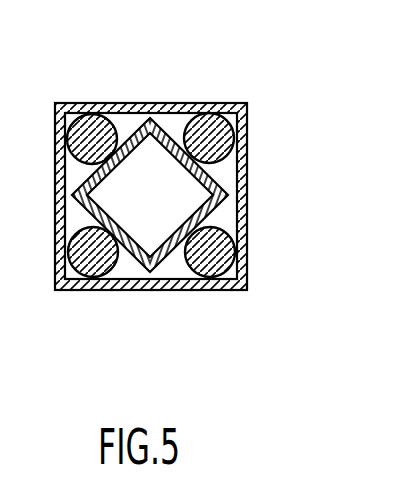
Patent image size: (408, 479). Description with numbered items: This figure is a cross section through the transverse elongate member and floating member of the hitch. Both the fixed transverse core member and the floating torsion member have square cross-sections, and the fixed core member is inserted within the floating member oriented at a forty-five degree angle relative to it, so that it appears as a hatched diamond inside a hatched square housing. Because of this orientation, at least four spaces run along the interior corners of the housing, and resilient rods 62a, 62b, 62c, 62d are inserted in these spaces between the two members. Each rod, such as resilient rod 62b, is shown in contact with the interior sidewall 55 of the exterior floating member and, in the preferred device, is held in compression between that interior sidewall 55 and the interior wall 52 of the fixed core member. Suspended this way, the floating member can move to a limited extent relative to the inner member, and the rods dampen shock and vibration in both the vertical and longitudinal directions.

The interior wall 52 is at (247, 156).
The interior sidewall 55 is at (233, 196).
The resilient rod 62a is at (245, 138).
The resilient rod 62b is at (243, 242).
The resilient rod 62c is at (74, 265).
The resilient rod 62d is at (76, 122).